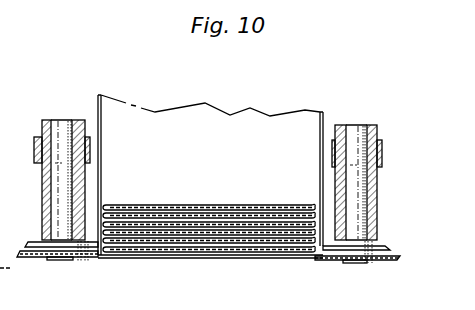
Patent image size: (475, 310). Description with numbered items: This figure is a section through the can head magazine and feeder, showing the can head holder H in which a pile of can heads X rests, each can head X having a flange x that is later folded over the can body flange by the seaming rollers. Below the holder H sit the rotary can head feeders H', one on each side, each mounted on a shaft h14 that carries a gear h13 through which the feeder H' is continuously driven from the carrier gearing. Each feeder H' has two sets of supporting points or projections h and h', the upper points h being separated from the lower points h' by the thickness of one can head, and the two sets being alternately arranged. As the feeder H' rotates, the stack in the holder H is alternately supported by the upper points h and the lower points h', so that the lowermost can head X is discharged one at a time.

The can head holder H is at (210, 166).
The rotary can head feeder H' is at (222, 263).
The can head supporting point h is at (204, 235).
The can head supporting point h' is at (200, 269).
The gear h13 is at (394, 152).
The shaft h14 is at (58, 120).
The can head X is at (209, 228).
The flange x is at (104, 205).